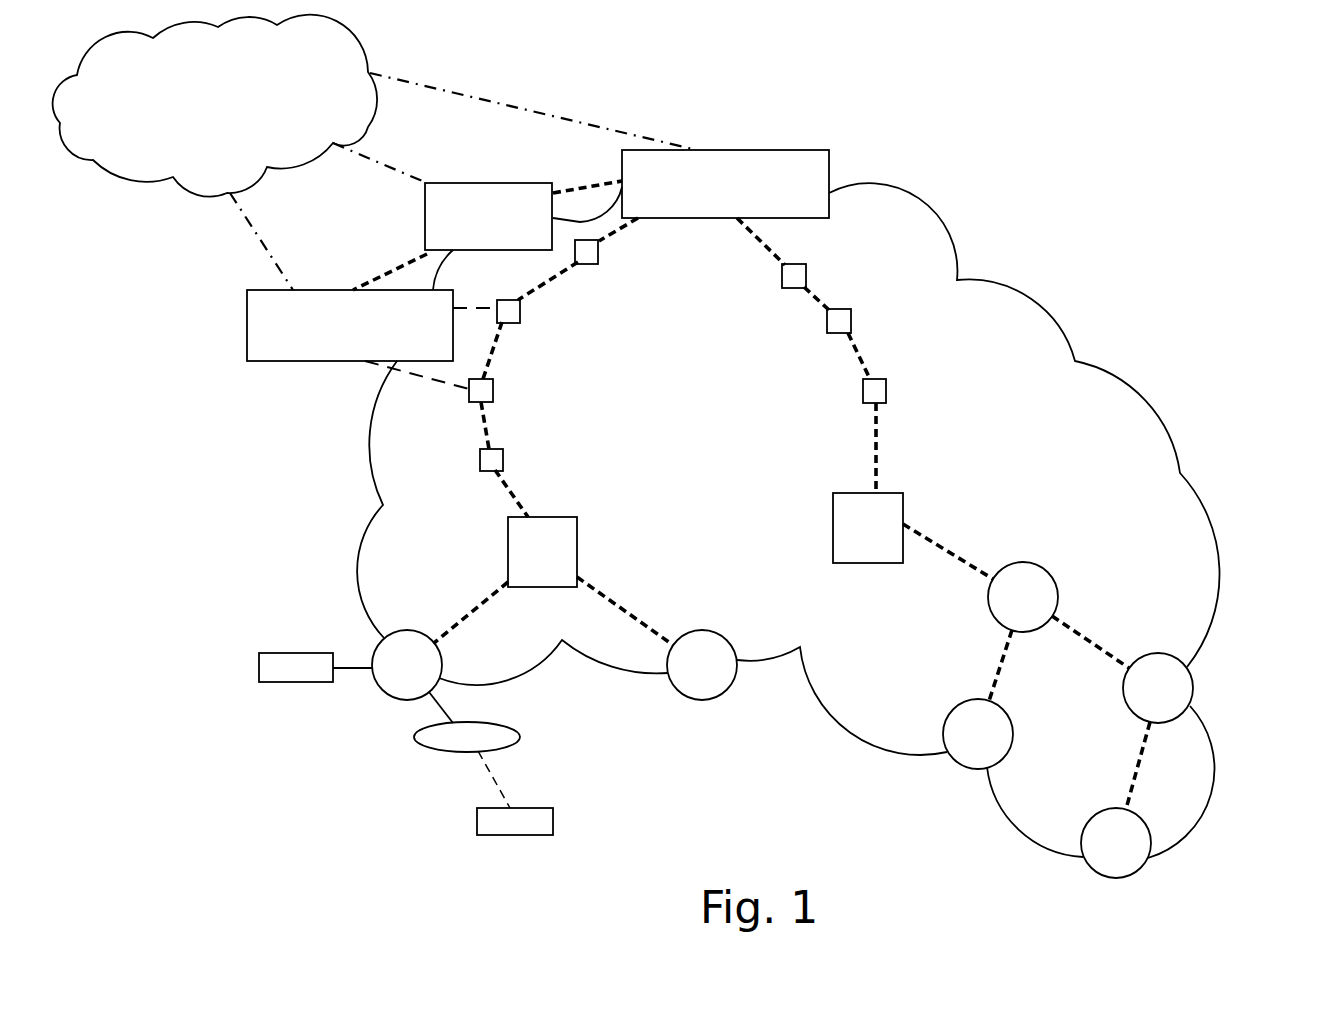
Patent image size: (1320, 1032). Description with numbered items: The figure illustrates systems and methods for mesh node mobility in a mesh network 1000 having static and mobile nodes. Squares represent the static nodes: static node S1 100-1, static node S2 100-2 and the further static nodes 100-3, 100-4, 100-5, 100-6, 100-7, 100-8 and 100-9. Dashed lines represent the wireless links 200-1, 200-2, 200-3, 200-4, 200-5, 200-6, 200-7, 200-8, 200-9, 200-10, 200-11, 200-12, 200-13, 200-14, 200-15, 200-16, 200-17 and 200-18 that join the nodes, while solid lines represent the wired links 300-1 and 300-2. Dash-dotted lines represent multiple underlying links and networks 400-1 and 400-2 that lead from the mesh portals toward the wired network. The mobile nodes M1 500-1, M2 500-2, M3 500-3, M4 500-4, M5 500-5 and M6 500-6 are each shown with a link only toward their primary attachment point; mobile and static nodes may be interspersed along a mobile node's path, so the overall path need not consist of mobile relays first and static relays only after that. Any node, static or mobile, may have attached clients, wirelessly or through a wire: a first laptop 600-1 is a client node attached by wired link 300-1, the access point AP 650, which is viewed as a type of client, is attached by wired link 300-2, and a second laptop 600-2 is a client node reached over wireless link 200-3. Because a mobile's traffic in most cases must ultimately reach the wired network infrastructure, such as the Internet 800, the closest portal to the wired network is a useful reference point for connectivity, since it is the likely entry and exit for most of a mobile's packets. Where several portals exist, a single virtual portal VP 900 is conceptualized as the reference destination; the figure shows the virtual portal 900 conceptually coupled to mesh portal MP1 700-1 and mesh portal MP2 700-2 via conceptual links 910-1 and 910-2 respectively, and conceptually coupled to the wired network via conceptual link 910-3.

The Internet 800 is at (188, 130).
The mesh network 1000 is at (665, 417).
The mesh portal MP1 700-1 is at (696, 211).
The mesh portal MP2 700-2 is at (321, 352).
The virtual portal VP 900 is at (468, 244).
The static node S1 100-1 is at (577, 525).
The static node S2 100-2 is at (903, 508).
The static node 100-3 is at (503, 458).
The static node 100-4 is at (863, 398).
The static node 100-5 is at (493, 389).
The static node 100-6 is at (827, 328).
The static node 100-7 is at (520, 312).
The static node 100-8 is at (782, 280).
The static node 100-9 is at (598, 255).
The wireless link 200-1 is at (486, 598).
The wireless link 200-2 is at (640, 620).
The wireless link 200-3 is at (496, 782).
The wireless link 200-4 is at (965, 561).
The wireless link 200-5 is at (998, 673).
The wireless link 200-6 is at (1136, 778).
The wireless link 200-7 is at (1085, 637).
The wireless link 200-8 is at (876, 458).
The wireless link 200-9 is at (860, 355).
The wireless link 200-10 is at (818, 300).
The wireless link 200-11 is at (766, 246).
The wireless link 200-12 is at (512, 495).
The wireless link 200-13 is at (486, 425).
The wireless link 200-14 is at (494, 345).
The wireless link 200-15 is at (552, 279).
The wireless link 200-16 is at (634, 224).
The wireless link 200-17 is at (418, 376).
The wireless link 200-18 is at (486, 305).
The wired link 300-1 is at (349, 668).
The wired link 300-2 is at (440, 711).
The multiple links and networks 400-1 is at (500, 102).
The multiple links and networks 400-2 is at (257, 235).
The mobile node M1 500-1 is at (380, 688).
The mobile node M2 500-2 is at (712, 699).
The mobile node M3 500-3 is at (1052, 578).
The mobile node M4 500-4 is at (972, 769).
The mobile node M5 500-5 is at (1192, 694).
The mobile node M6 500-6 is at (1118, 878).
The client node (first laptop) 600-1 is at (259, 672).
The client node (second laptop) 600-2 is at (553, 820).
The client node (access point, AP) 650 is at (518, 732).
The conceptual link between VP and MP1 910-1 is at (580, 163).
The conceptual link between VP and MP2 910-2 is at (395, 270).
The conceptual link between VP and Internet 910-3 is at (375, 168).